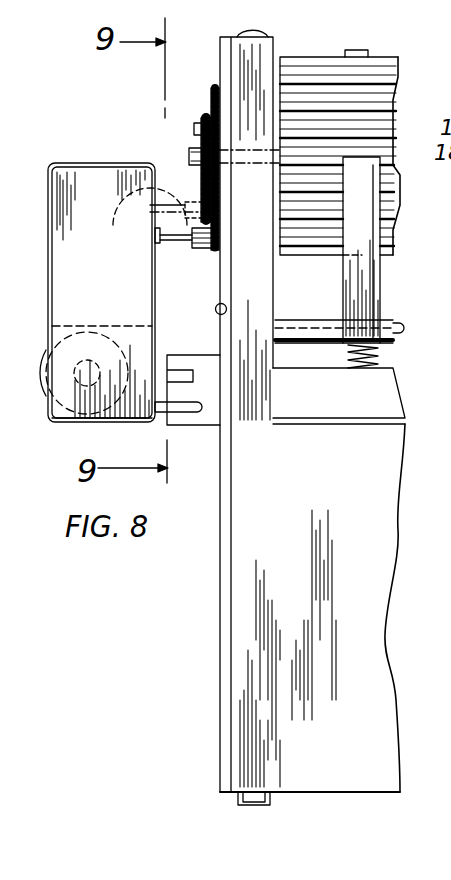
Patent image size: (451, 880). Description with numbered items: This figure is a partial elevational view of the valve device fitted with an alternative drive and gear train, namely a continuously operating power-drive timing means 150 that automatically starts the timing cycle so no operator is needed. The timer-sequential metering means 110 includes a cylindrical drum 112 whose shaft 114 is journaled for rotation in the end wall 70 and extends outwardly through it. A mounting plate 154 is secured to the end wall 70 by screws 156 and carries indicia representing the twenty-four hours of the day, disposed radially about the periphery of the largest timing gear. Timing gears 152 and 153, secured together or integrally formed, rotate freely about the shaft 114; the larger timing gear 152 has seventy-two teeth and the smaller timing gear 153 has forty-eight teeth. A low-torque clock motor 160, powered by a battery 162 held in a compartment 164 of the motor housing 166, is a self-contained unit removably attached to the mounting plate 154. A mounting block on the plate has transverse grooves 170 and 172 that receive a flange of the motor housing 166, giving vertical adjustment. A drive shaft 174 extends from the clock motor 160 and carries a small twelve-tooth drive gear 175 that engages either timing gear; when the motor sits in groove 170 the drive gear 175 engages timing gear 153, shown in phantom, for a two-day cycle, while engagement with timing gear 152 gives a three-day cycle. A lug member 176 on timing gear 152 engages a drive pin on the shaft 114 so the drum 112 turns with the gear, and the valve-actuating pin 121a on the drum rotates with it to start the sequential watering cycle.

The end wall 70 is at (243, 272).
The timer-sequential metering means 110 is at (405, 62).
The cylindrical drum 112 is at (298, 74).
The valve-actuating pin 121a is at (360, 50).
The shaft 114 is at (188, 155).
The power-drive timing means 150 is at (130, 131).
The timing gear 152 is at (214, 90).
The timing gear 153 is at (205, 120).
The mounting plate 154 is at (228, 616).
The screws 156 is at (216, 309).
The clock motor 160 is at (53, 172).
The battery 162 is at (47, 400).
The compartment 164 is at (47, 336).
The motor housing 166 is at (72, 250).
The groove 170 is at (178, 372).
The groove 172 is at (196, 413).
The drive shaft 174 is at (172, 240).
The drive gear 175 is at (200, 250).
The lug member 176 is at (194, 129).